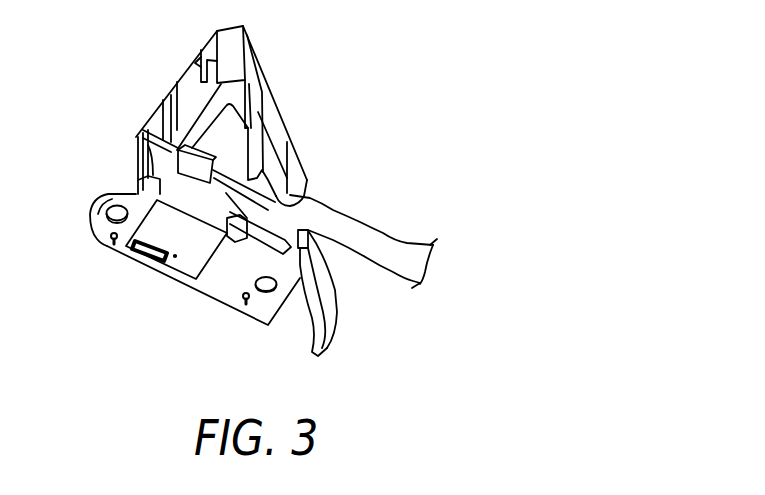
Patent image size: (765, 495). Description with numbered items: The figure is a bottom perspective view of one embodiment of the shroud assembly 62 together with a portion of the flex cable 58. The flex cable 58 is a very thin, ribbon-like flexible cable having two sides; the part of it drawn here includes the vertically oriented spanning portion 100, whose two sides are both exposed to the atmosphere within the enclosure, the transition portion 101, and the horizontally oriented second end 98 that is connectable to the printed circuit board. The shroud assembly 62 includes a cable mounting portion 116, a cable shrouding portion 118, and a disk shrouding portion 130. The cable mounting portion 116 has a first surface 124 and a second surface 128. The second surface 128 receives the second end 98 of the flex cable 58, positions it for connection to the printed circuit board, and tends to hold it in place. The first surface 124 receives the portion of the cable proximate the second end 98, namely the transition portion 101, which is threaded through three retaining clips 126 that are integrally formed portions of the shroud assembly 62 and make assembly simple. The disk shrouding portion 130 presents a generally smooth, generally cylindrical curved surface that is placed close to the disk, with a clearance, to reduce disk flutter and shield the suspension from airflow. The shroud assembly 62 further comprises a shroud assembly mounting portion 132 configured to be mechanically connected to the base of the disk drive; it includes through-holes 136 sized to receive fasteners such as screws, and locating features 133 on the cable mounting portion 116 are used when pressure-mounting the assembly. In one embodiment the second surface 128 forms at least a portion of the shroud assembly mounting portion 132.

The shroud assembly 62 is at (354, 116).
The flex cable 58 is at (364, 219).
The spanning portion 100 is at (377, 242).
The transition portion 101 is at (302, 187).
The disk shrouding portion 130 is at (273, 133).
The first surface 124 is at (178, 150).
The retaining clips 126 is at (171, 147).
The cable mounting portion 116 is at (142, 172).
The second surface 128 is at (220, 283).
The shroud assembly mounting portion 132 is at (228, 303).
The through-holes 136 is at (94, 224).
The locating features 133 is at (112, 245).
The second end 98 is at (173, 258).
The cable shrouding portion 118 is at (338, 312).